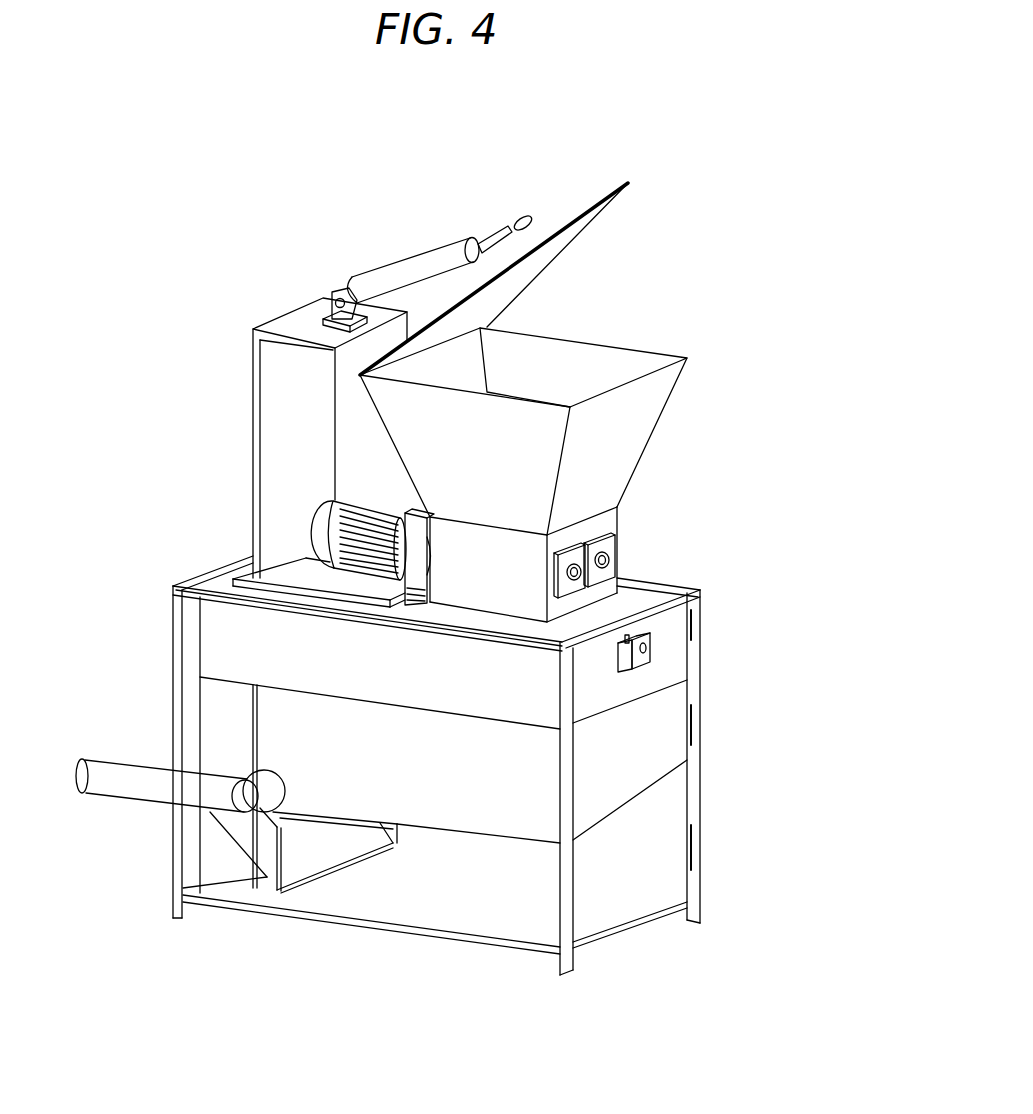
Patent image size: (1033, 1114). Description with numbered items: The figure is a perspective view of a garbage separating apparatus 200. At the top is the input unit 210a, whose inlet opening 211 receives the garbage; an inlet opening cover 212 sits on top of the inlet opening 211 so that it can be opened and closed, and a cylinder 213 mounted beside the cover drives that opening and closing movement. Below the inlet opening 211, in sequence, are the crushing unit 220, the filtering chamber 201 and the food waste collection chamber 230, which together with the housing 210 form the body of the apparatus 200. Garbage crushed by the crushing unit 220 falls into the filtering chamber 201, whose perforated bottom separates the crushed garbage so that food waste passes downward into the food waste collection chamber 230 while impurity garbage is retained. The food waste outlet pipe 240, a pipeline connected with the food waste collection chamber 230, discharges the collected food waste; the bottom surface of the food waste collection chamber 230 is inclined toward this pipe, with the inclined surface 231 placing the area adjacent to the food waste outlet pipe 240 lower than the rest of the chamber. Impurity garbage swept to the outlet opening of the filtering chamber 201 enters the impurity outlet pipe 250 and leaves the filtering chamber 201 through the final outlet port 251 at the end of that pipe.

The garbage separating apparatus 200 is at (652, 136).
The filtering chamber 201 is at (720, 624).
The housing 210 is at (653, 442).
The input unit 210a is at (588, 150).
The inlet opening 211 is at (588, 350).
The inlet opening cover 212 is at (548, 220).
The cylinder actuator 213 is at (412, 267).
The crushing unit 220 is at (640, 545).
The food waste collection chamber 230 is at (720, 708).
The inclined plate 231 is at (630, 807).
The food waste outlet pipe 240 is at (117, 768).
The impurity outlet pipe 250 is at (268, 853).
The final outlet port 251 is at (338, 842).